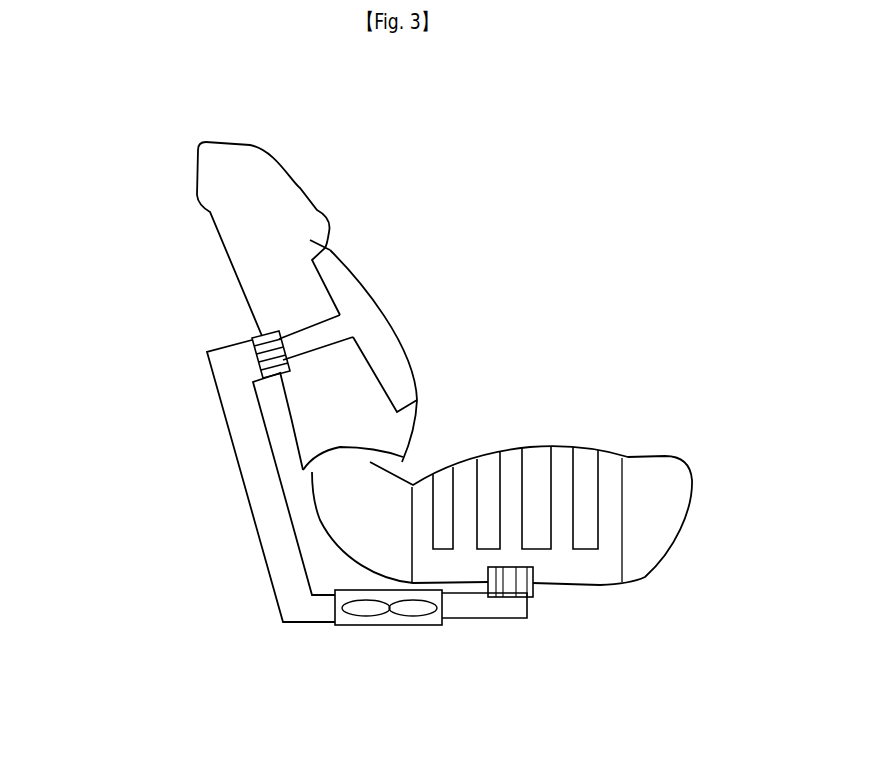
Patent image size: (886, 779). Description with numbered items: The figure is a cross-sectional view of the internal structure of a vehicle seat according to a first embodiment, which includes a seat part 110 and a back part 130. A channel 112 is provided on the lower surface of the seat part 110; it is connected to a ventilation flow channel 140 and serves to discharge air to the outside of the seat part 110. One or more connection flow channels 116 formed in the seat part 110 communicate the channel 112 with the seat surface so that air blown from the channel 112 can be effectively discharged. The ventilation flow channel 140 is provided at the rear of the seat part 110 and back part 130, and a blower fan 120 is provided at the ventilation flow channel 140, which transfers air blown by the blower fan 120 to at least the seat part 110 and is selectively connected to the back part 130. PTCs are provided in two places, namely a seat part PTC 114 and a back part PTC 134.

The seat part 110 is at (652, 467).
The channel 112 is at (608, 564).
The seat part PTC 114 is at (527, 587).
The connection flow channels 116 is at (565, 475).
The blower fan 120 is at (377, 625).
The back part 130 is at (264, 178).
The back part PTC 134 is at (258, 336).
The ventilation flow channel 140 is at (200, 497).